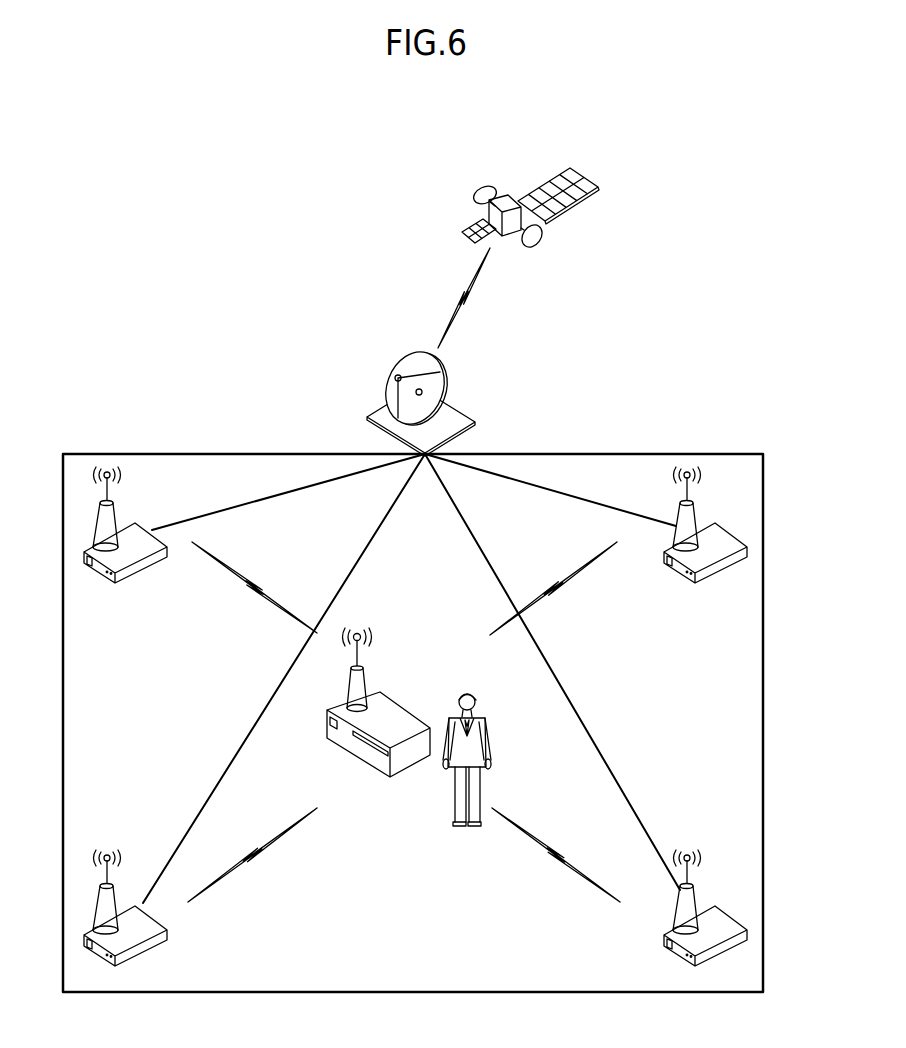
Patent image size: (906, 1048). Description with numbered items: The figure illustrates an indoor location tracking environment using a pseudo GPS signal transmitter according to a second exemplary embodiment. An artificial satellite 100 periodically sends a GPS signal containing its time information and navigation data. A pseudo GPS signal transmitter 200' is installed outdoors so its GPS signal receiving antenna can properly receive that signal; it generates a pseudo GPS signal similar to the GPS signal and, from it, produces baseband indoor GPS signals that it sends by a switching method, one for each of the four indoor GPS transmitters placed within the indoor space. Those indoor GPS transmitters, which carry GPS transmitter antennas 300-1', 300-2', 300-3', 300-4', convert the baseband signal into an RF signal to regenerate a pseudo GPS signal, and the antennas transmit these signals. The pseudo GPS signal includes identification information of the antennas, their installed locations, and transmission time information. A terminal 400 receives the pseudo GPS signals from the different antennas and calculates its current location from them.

The artificial satellite 100 is at (505, 198).
The pseudo GPS signal transmitter 200' is at (442, 400).
The GPS transmitter antenna 300-1' is at (125, 520).
The GPS transmitter antenna 300-2' is at (705, 520).
The GPS transmitter antenna 300-3' is at (152, 884).
The GPS transmitter antenna 300-4' is at (671, 885).
The terminal 400 is at (398, 700).